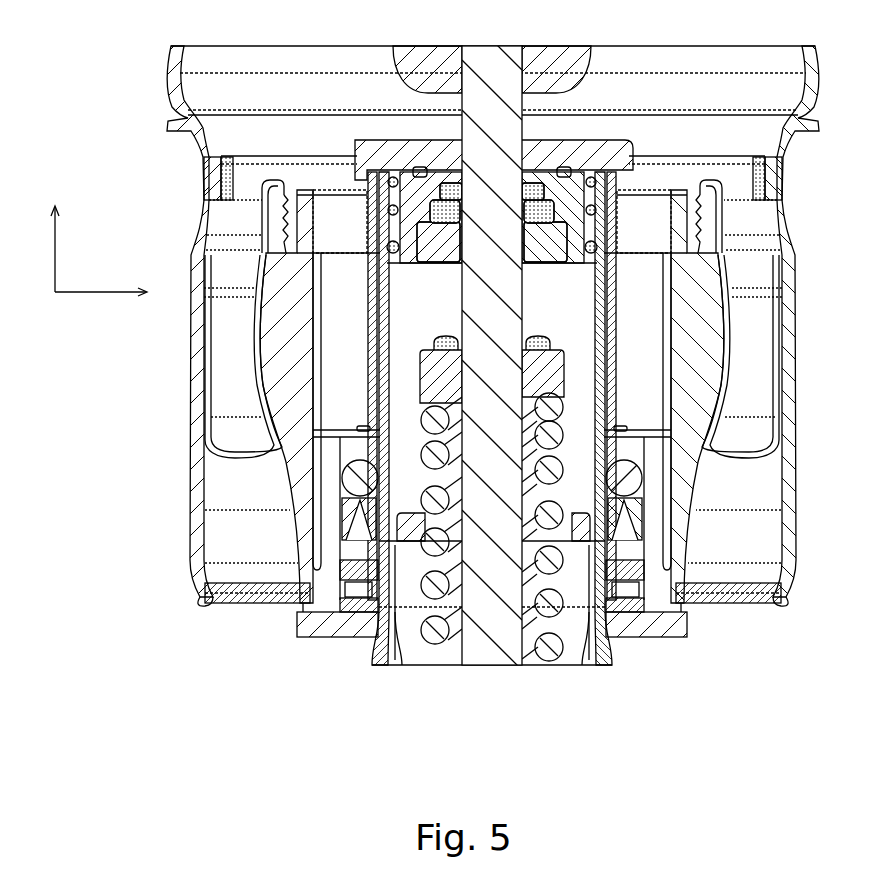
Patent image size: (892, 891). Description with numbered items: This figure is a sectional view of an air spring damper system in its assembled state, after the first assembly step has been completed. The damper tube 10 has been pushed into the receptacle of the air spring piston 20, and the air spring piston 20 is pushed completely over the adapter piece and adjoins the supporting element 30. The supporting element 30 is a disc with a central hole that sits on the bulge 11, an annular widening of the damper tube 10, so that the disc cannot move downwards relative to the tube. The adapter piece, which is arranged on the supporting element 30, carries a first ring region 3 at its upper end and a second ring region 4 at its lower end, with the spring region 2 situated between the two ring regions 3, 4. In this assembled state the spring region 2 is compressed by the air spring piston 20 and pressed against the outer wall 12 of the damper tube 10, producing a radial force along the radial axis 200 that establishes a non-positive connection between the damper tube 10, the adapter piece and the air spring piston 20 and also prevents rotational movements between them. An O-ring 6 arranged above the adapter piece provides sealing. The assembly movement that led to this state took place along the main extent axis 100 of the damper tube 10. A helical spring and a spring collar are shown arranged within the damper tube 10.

The spring region 2 is at (345, 597).
The first ring region 3 is at (200, 594).
The second ring region 4 is at (356, 592).
The O-ring 6 is at (340, 470).
The damper tube 10 is at (300, 596).
The bulge 11 is at (372, 640).
The outer wall 12 is at (340, 580).
The air spring piston 20 is at (357, 445).
The supporting element 30 is at (350, 600).
The main extent axis 100 is at (73, 237).
The radial axis 200 is at (121, 296).